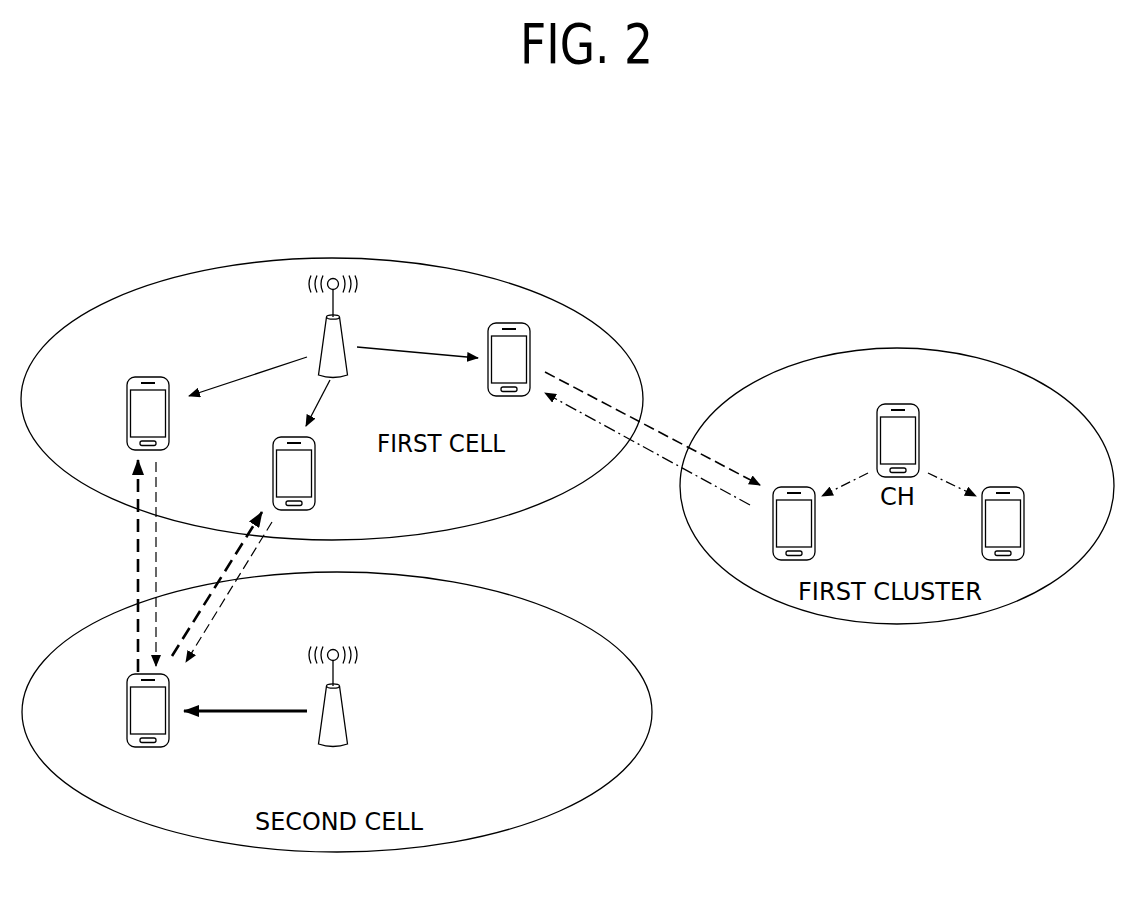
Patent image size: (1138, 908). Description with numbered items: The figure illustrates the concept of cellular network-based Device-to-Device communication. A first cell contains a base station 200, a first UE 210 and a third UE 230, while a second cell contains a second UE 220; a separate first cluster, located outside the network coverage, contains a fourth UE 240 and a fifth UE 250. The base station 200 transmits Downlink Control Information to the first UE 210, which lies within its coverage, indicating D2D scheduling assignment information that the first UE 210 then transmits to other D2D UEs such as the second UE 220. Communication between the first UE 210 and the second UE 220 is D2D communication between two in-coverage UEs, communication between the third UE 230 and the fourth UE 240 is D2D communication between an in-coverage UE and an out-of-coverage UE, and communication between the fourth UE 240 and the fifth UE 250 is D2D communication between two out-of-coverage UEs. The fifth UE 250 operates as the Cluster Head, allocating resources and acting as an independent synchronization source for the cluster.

The base station 200 is at (343, 326).
The first UE 210 is at (273, 473).
The second UE 220 is at (127, 709).
The third UE 230 is at (506, 322).
The fourth UE 240 is at (791, 486).
The fifth UE 250 is at (921, 437).